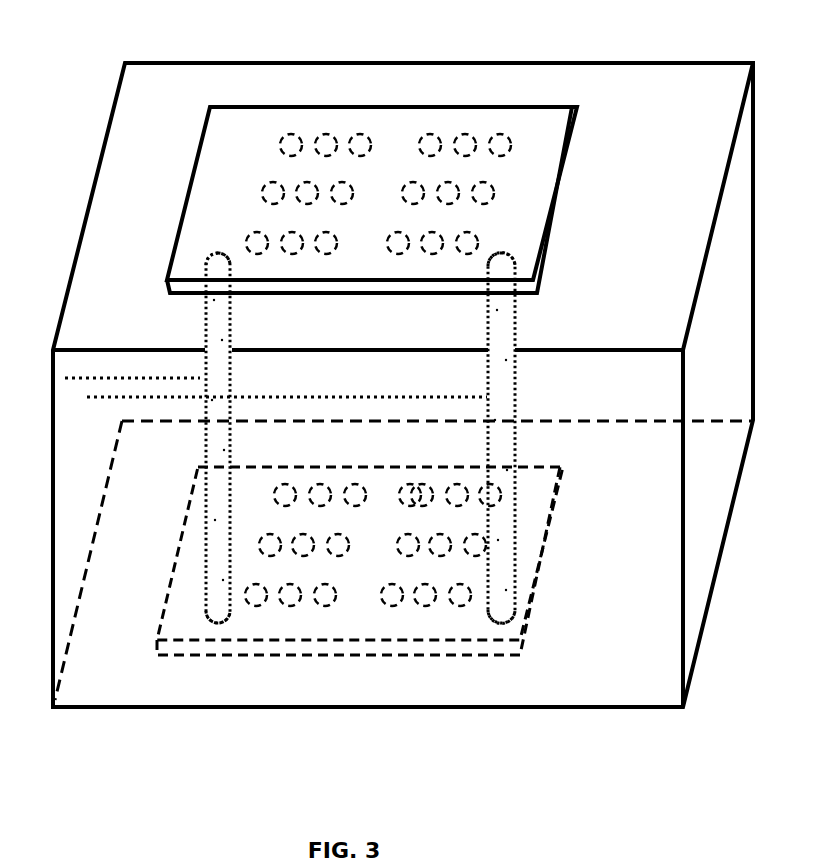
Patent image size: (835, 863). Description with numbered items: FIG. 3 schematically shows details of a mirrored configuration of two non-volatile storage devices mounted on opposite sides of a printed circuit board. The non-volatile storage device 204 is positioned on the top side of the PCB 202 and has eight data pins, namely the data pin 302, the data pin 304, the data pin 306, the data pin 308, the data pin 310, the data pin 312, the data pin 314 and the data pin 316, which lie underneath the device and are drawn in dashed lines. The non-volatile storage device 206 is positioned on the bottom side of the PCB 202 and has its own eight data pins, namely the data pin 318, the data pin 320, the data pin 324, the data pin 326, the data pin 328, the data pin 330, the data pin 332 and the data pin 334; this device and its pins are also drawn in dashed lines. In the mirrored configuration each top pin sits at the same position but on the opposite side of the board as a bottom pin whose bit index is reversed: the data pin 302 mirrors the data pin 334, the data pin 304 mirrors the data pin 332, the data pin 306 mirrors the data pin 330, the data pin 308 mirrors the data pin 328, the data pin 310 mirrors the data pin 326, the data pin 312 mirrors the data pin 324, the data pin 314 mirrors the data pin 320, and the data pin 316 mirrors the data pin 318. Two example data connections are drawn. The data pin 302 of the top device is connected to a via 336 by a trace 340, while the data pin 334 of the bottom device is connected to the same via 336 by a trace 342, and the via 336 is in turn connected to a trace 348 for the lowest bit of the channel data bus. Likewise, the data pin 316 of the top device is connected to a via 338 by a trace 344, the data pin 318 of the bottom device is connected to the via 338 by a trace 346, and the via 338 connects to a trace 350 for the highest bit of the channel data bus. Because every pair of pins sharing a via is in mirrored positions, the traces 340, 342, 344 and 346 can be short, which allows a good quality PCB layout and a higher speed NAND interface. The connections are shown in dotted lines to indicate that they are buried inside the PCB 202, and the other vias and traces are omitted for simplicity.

The PCB 202 is at (138, 112).
The non-volatile storage device 204 is at (227, 127).
The non-volatile storage device 206 is at (182, 647).
The data pin DQ[0] 302 is at (253, 235).
The data pin DQ[1] 304 is at (285, 235).
The data pin DQ[2] 306 is at (310, 183).
The data pin DQ[3] 308 is at (360, 134).
The data pin DQ[4] 310 is at (430, 134).
The data pin DQ[5] 312 is at (450, 183).
The data pin DQ[6] 314 is at (435, 233).
The data pin DQ[7] 316 is at (475, 232).
The data pin DQ[0] 318 is at (455, 605).
The data pin DQ[1] 320 is at (423, 605).
The data pin DQ[2] 324 is at (430, 547).
The data pin DQ[3] 326 is at (410, 498).
The data pin DQ[4] 328 is at (352, 490).
The data pin DQ[5] 330 is at (303, 533).
The data pin DQ[6] 332 is at (290, 604).
The data pin DQ[7] 334 is at (258, 604).
The via 336 is at (220, 317).
The via 338 is at (508, 315).
The trace 340 is at (230, 243).
The trace 342 is at (235, 623).
The trace 344 is at (490, 246).
The trace 346 is at (477, 622).
The trace 348 is at (177, 378).
The trace 350 is at (97, 397).